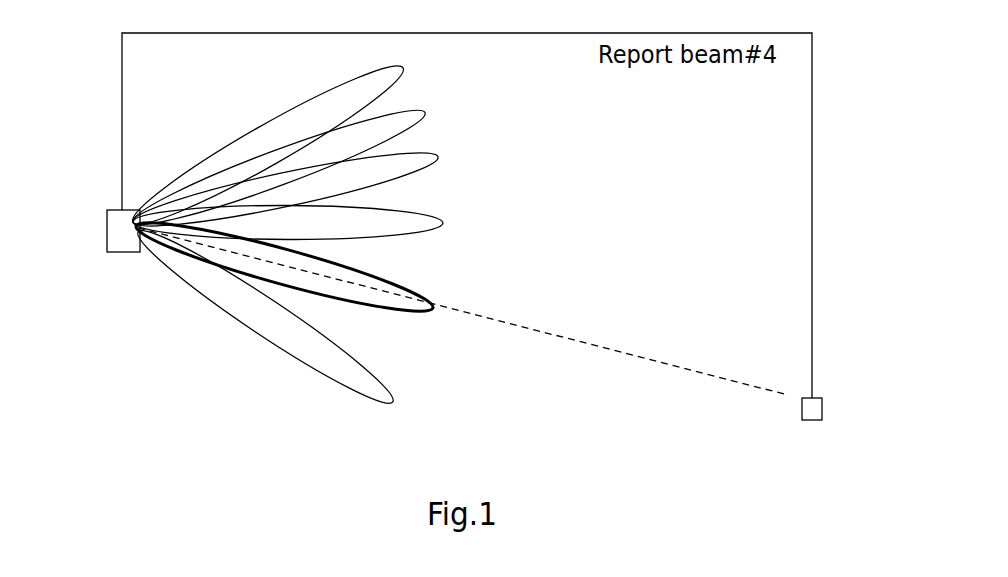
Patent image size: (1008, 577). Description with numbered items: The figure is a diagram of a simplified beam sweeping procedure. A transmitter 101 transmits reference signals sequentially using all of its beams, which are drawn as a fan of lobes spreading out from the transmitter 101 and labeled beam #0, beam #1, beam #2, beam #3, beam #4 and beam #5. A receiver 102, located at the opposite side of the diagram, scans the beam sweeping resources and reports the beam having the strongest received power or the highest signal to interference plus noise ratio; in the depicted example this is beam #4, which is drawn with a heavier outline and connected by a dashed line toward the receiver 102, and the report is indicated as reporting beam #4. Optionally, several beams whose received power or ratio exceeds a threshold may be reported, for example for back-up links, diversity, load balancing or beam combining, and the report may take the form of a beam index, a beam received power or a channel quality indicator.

The transmitter 101 is at (93, 231).
The receiver 102 is at (838, 411).
The beam # 0 is at (268, 145).
The beam # 1 is at (279, 167).
The beam # 2 is at (285, 189).
The beam # 3 is at (288, 222).
The beam # 4 is at (284, 267).
The beam # 5 is at (265, 317).